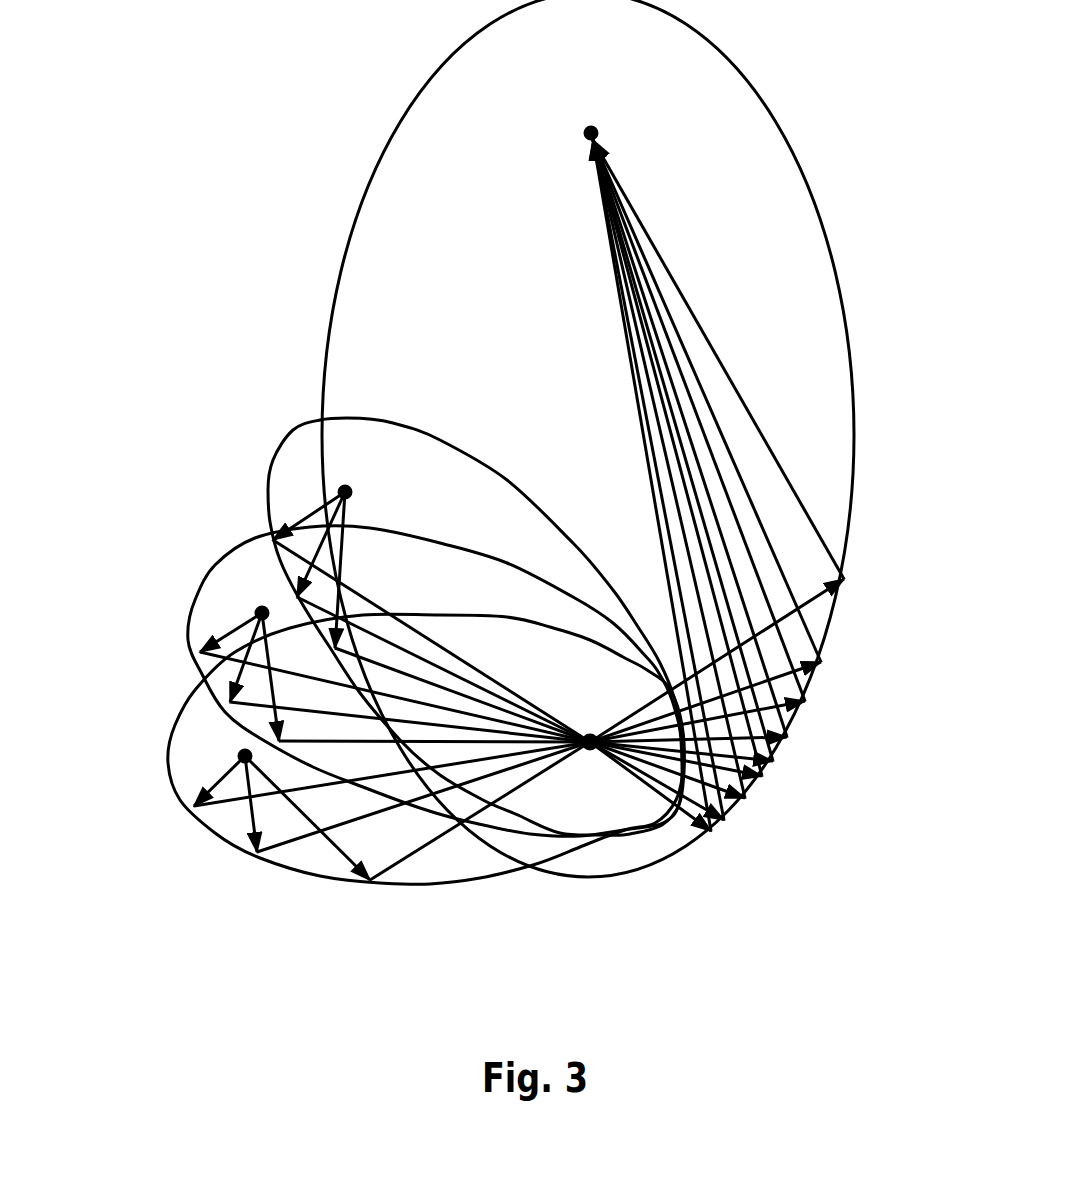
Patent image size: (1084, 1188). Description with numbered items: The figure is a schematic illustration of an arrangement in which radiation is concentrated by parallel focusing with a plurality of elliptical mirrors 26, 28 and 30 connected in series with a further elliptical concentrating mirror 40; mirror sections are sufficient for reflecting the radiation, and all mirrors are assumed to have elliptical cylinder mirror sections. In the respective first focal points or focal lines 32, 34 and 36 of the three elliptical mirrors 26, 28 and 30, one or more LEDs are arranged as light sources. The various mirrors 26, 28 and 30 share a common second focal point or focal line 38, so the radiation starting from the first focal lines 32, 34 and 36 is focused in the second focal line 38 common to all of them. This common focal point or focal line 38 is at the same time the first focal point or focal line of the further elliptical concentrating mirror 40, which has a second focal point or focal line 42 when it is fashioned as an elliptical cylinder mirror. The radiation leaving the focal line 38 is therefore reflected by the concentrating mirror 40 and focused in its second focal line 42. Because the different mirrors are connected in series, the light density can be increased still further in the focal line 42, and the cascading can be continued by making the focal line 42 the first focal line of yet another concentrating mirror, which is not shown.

The elliptical mirror 26 is at (168, 785).
The elliptical mirror 28 is at (188, 640).
The elliptical mirror 30 is at (268, 470).
The first focal point or focal line 32 is at (243, 755).
The first focal point or focal line 34 is at (260, 612).
The first focal point or focal line 36 is at (343, 488).
The common second focal point or focal line 38 is at (590, 736).
The elliptical concentrating mirror 40 is at (853, 337).
The second focal point or focal line 42 is at (601, 129).